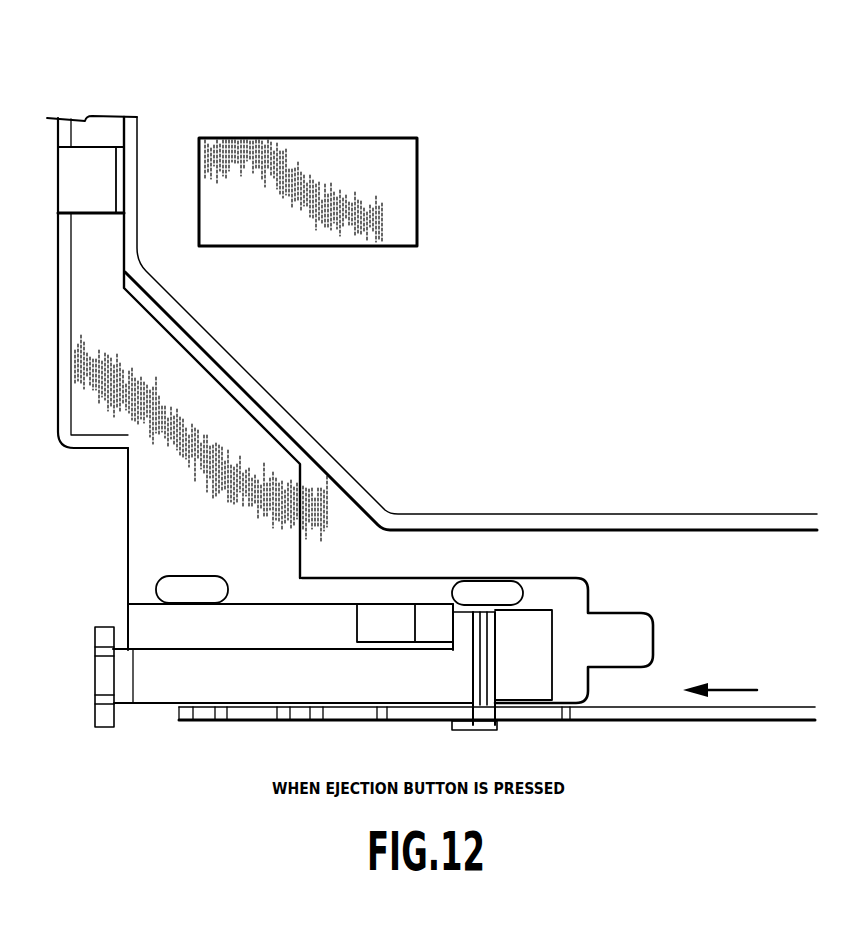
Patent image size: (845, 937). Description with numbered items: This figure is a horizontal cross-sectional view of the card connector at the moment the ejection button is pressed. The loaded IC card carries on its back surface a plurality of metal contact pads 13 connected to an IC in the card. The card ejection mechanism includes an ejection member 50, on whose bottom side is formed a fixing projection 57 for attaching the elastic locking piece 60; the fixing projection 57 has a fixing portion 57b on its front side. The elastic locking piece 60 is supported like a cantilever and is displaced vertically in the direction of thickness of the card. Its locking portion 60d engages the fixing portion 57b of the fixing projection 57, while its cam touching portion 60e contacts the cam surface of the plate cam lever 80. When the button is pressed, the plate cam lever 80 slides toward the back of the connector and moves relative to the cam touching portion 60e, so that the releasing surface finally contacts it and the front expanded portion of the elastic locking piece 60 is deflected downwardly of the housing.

The metal contact pads 13 is at (398, 200).
The ejection member 50 is at (237, 440).
The fixing projection 57 is at (383, 623).
The fixing portion 57b is at (453, 627).
The elastic locking piece 60 is at (248, 672).
The locking portion 60d is at (466, 612).
The cam touching portion 60e is at (463, 726).
The plate cam lever 80 is at (718, 713).